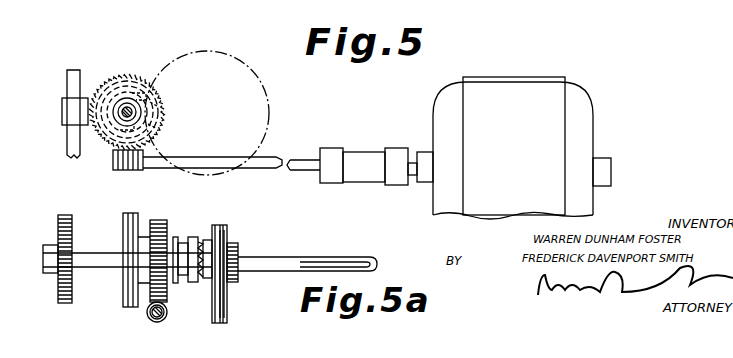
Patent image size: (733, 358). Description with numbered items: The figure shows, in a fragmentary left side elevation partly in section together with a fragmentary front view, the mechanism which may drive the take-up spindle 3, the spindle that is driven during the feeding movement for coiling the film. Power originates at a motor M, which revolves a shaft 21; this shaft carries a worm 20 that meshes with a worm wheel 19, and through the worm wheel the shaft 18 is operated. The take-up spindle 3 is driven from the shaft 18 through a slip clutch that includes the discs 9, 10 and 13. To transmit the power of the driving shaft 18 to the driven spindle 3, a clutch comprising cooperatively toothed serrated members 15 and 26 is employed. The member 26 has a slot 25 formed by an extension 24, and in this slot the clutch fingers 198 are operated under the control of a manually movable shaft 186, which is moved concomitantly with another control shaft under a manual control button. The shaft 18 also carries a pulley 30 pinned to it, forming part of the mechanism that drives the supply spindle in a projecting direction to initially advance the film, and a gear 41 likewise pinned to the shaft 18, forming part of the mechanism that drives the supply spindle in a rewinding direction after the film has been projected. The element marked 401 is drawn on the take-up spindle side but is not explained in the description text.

In FIG. 5, the manually movable shaft 186 is at (67, 150).
In FIG. 5, the worm wheel 19 is at (110, 147).
In FIG. 5A, the worm wheel 19 is at (185, 210).
In FIG. 5, the shaft 18 is at (123, 106).
In FIG. 5A, the shaft 18 is at (80, 258).
In FIG. 5, the clutch fingers 198 is at (139, 92).
In FIG. 5, the slot 25 is at (152, 110).
In FIG. 5A, the slot 25 is at (183, 244).
In FIG. 5, the worm 20 is at (136, 171).
In FIG. 5A, the worm 20 is at (165, 317).
In FIG. 5, the shaft 21 is at (258, 169).
In FIG. 5A, the shaft 21 is at (147, 312).
In FIG. 5, the motor M is at (522, 148).
In FIG. 5A, the gear 41 is at (58, 288).
In FIG. 5A, the pulley 30 is at (123, 291).
In FIG. 5A, the extension 24 is at (178, 240).
In FIG. 5A, the toothed serrated member 26 is at (194, 283).
In FIG. 5A, the disc 13 is at (226, 270).
In FIG. 5A, the disc 10 is at (228, 296).
In FIG. 5A, the disc 9 is at (228, 310).
In FIG. 5A, the toothed serrated member 15 is at (226, 248).
In FIG. 5A, the shaft 401 is at (242, 257).
In FIG. 5A, the take-up spindle 3 is at (291, 258).